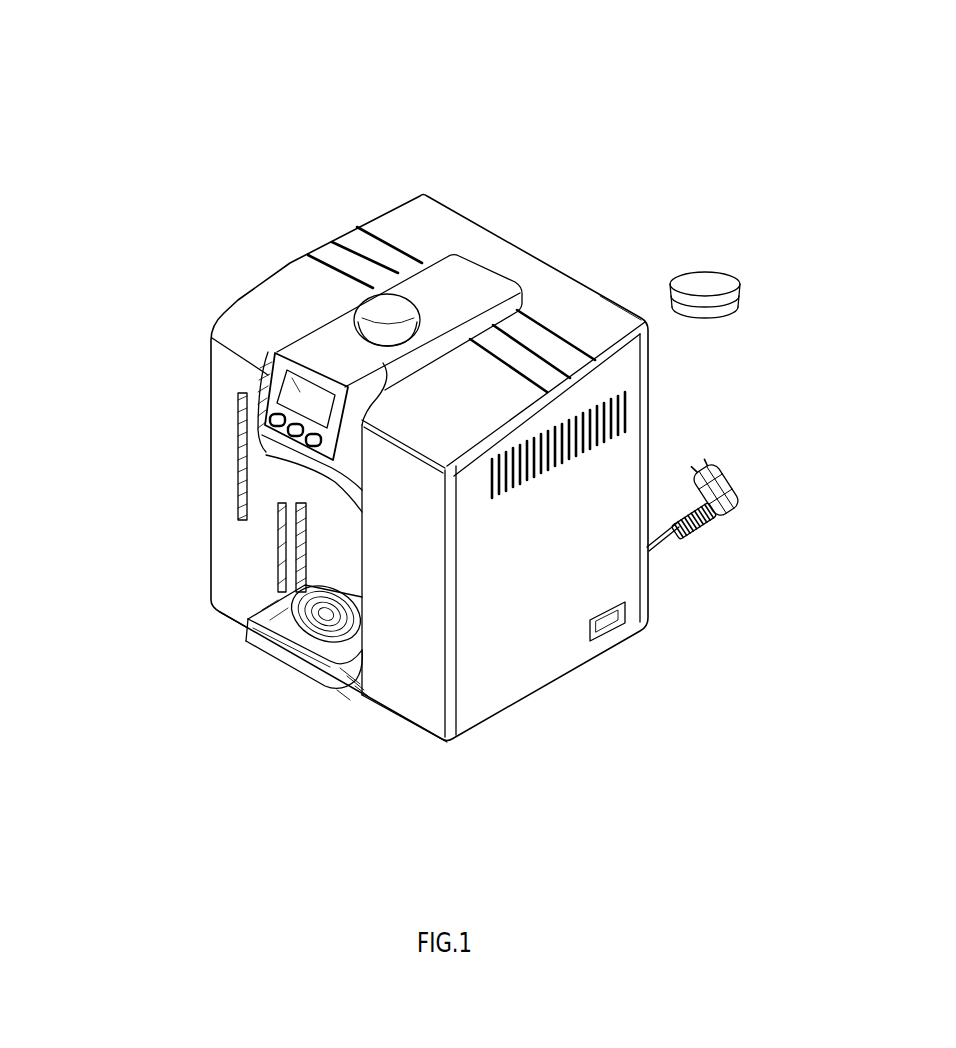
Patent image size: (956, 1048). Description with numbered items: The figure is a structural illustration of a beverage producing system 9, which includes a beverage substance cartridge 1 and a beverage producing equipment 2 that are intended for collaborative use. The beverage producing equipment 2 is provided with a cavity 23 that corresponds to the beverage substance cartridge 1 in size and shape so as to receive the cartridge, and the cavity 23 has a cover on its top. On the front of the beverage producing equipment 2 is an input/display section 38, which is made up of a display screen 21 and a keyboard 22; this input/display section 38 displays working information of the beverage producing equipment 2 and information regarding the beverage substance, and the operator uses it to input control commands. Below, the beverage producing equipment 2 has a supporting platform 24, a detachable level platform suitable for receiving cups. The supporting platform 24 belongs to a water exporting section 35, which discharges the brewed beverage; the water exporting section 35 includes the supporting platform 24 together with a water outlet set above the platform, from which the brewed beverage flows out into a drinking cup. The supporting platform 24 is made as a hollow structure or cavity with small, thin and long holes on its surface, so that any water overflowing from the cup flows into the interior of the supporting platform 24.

The beverage producing system 9 is at (200, 78).
The beverage producing equipment 2 is at (606, 222).
The beverage substance cartridge 1 is at (744, 240).
The display screen 21 is at (298, 390).
The keyboard 22 is at (275, 421).
The cavity 23 is at (363, 303).
The supporting platform 24 is at (290, 656).
The water exporting section 35 is at (314, 698).
The input/display section 38 is at (184, 265).